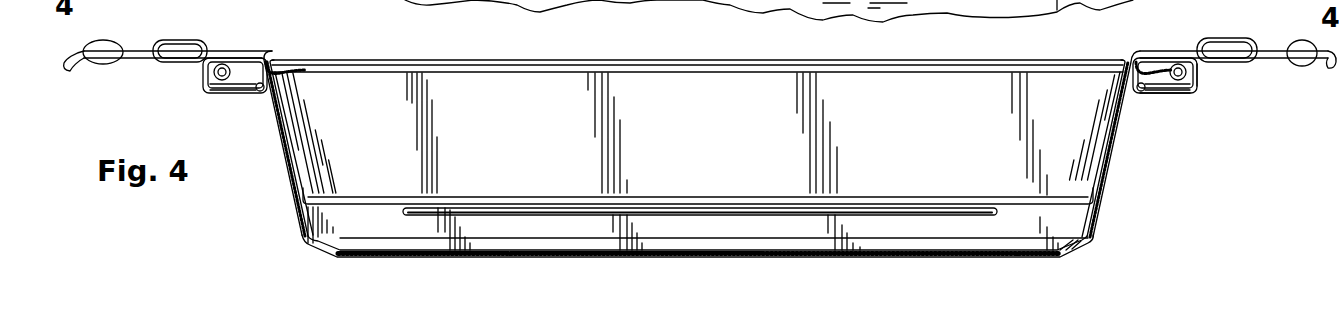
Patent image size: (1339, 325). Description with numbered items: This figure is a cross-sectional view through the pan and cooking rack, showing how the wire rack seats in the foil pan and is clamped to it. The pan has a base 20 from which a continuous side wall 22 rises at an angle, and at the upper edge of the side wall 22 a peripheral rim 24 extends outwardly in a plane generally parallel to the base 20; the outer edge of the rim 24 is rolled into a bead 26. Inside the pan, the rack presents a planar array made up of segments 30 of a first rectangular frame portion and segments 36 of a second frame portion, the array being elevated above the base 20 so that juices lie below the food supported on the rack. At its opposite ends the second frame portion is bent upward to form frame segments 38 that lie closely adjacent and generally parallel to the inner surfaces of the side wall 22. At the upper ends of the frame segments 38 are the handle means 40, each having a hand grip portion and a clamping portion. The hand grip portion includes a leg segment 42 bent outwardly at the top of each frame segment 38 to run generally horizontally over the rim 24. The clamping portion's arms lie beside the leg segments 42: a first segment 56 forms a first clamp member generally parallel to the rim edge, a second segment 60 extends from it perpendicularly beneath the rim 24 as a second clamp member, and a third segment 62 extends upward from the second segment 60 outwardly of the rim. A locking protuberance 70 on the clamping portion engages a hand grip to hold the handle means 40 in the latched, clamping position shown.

The base 20 is at (975, 250).
The side wall 22 is at (715, 85).
The peripheral rim 24 is at (263, 56).
The bead 26 is at (240, 60).
The segments 30 is at (412, 216).
The segments 36 is at (363, 200).
The frame segments 38 is at (287, 121).
The handle means 40 is at (160, 13).
The leg segment 42 is at (217, 52).
The first segment 56 is at (1140, 91).
The second segment 60 is at (1167, 93).
The third segment 62 is at (1202, 69).
The locking protuberance 70 is at (1302, 42).